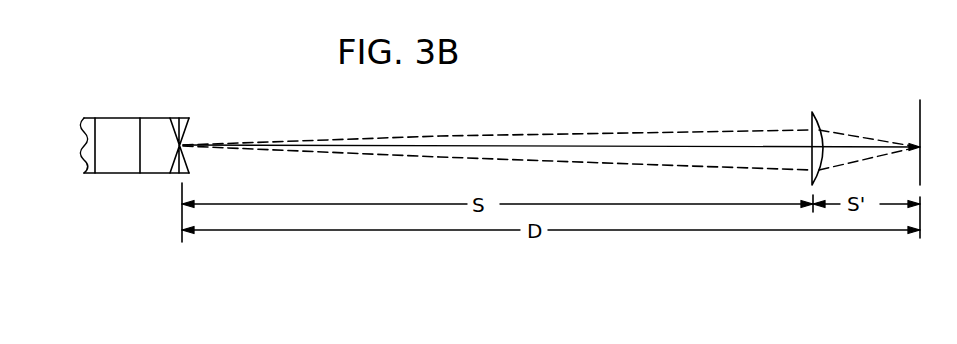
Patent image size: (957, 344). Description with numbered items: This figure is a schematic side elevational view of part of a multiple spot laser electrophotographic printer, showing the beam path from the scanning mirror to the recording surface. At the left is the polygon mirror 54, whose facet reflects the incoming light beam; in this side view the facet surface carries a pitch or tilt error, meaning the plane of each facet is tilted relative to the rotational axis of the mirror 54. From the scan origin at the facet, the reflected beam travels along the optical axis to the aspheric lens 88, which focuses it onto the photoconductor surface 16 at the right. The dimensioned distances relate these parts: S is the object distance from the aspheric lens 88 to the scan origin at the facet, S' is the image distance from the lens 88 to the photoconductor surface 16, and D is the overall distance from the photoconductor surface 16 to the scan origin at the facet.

The polygon mirror 54 is at (134, 145).
The aspheric lens 88 is at (804, 113).
The photoconductor surface 16 is at (920, 118).